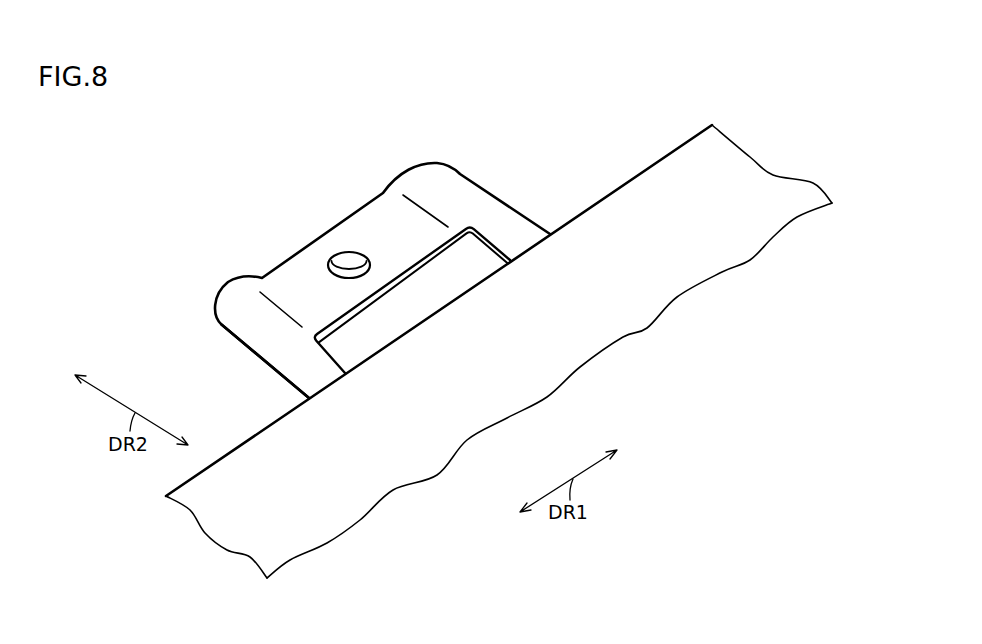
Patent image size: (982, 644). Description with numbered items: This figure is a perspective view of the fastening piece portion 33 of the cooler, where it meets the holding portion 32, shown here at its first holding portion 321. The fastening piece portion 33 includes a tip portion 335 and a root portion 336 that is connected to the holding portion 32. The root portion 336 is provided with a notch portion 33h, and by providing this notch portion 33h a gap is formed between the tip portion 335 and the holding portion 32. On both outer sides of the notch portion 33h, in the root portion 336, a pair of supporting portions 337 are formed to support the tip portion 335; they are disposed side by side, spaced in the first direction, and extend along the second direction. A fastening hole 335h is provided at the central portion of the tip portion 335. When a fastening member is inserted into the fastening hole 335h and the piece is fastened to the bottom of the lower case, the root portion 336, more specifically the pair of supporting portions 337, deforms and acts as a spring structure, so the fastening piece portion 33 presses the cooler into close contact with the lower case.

The holding portion 32 is at (499, 341).
The first holding portion 321 is at (643, 190).
The fastening piece portion 33 is at (369, 238).
The tip portion 335 is at (361, 223).
The fastening hole 335h is at (338, 252).
The notch portion 33h is at (478, 225).
The root portion 336 is at (264, 384).
The supporting portions 337 is at (307, 363).